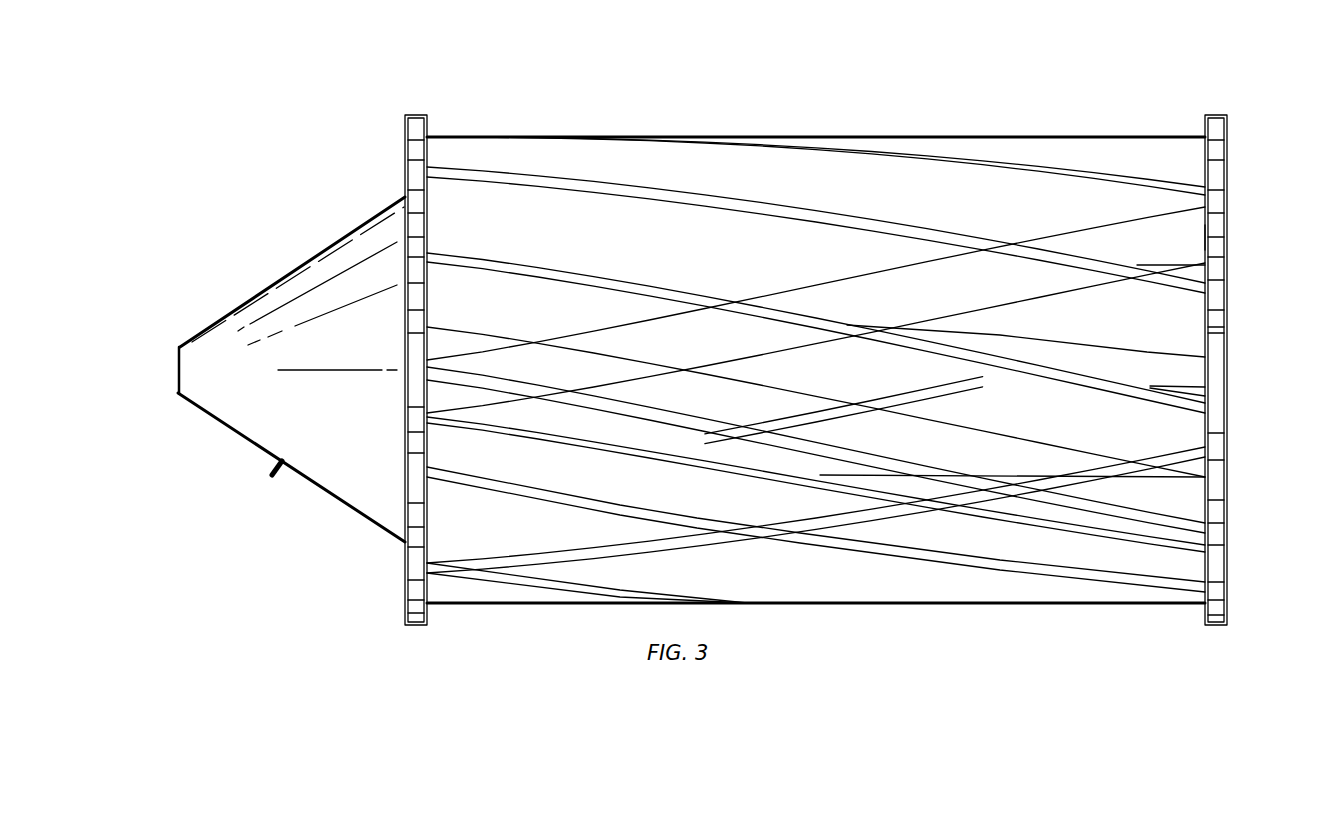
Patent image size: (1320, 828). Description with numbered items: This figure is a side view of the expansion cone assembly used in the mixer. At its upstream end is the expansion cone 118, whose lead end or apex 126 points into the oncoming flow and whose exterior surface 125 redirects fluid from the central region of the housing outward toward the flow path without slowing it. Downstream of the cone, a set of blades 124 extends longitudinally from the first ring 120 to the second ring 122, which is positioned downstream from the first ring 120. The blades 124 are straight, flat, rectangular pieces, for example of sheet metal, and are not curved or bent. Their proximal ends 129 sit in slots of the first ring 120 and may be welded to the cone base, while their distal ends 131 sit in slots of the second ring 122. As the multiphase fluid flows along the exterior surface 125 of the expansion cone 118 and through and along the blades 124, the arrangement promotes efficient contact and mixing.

The expansion cone 118 is at (272, 470).
The first ring 120 is at (411, 112).
The second ring 122 is at (1226, 112).
The blades 124 is at (836, 172).
The exterior surface 125 is at (262, 297).
The lead end or apex 126 is at (179, 369).
The proximal ends 129 is at (486, 152).
The distal ends 131 is at (1178, 236).